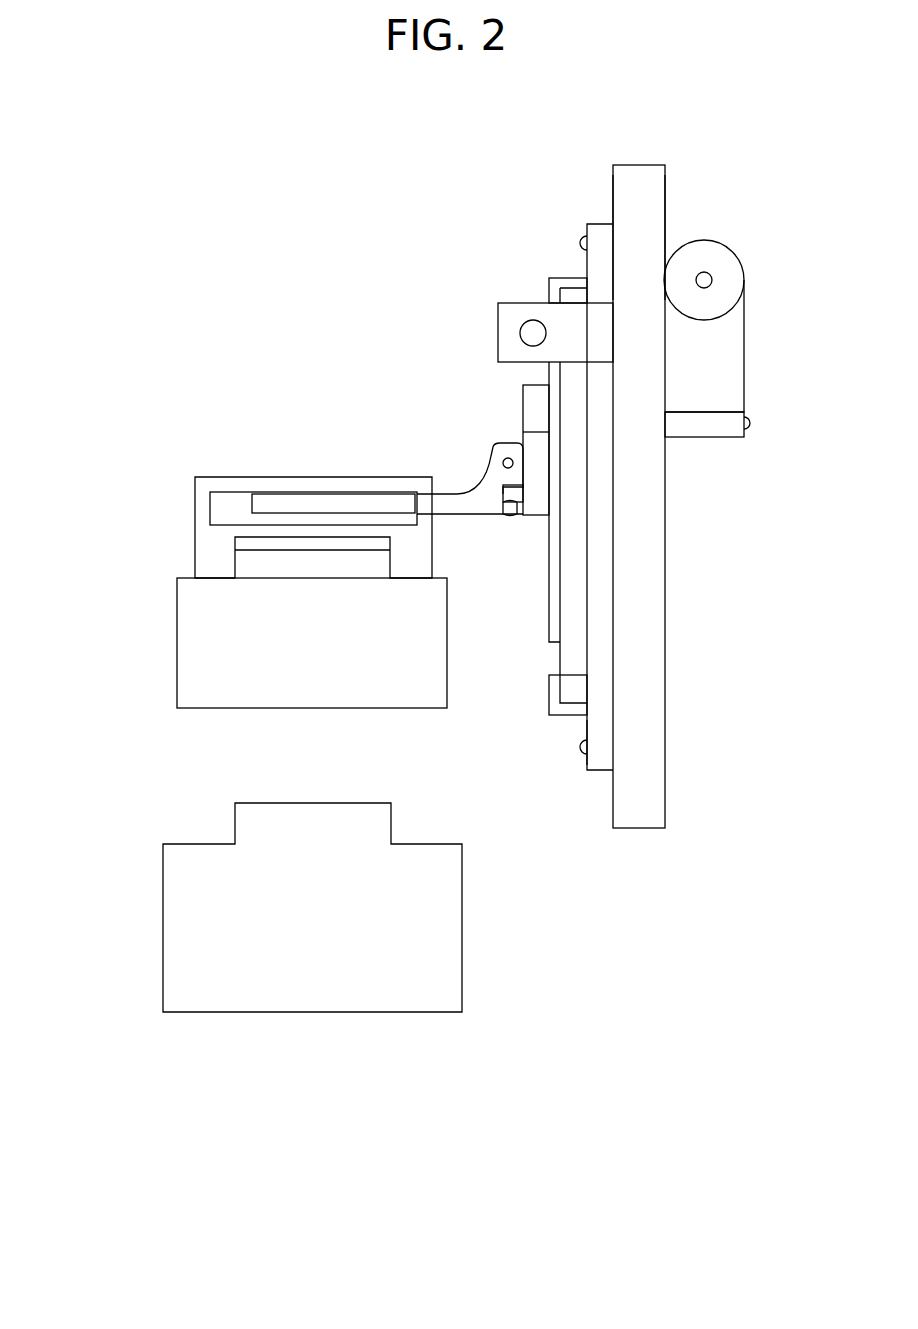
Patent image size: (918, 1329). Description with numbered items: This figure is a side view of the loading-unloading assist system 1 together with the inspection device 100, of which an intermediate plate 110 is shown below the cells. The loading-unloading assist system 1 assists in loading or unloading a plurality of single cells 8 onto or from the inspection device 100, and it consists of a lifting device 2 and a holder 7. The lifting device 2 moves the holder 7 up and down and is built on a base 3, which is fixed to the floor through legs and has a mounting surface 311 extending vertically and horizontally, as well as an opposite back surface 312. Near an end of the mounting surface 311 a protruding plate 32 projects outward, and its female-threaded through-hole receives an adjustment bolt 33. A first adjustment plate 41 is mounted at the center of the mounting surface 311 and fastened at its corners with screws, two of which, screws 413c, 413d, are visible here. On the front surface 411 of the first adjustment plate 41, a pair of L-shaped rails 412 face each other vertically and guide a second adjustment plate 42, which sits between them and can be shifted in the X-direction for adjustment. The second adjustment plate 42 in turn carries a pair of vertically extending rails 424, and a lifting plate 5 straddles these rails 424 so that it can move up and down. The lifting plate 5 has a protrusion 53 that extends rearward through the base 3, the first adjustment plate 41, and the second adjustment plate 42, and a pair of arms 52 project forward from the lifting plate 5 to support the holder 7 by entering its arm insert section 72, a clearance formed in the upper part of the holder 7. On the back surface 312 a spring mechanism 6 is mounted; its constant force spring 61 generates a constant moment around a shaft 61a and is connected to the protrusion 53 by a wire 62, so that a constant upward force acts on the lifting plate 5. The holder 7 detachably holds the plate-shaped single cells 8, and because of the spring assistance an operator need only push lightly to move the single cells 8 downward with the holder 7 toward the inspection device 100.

The loading-unloading assist system 1 is at (263, 284).
The lifting device 2 is at (416, 300).
The base 3 is at (640, 164).
The mounting surface 311 is at (606, 173).
The back surface 312 is at (667, 176).
The lifting plate 5 is at (522, 385).
The spring mechanism 6 is at (748, 217).
The holder 7 is at (303, 380).
The single cell 8 is at (177, 642).
The protruding plate 32 is at (500, 305).
The adjustment bolt 33 is at (520, 333).
The first adjustment plate 41 is at (589, 223).
The second adjustment plate 42 is at (560, 660).
The front surface 411 is at (584, 722).
The rails 412 is at (550, 280).
The screw 413c is at (579, 239).
The screw 413d is at (578, 754).
The rails 424 is at (549, 590).
The arms 52 is at (452, 493).
The protrusion 53 is at (705, 420).
The constant force spring 61 is at (700, 240).
The shaft 61a is at (713, 285).
The wire 62 is at (745, 390).
The arm insert section 72 is at (225, 500).
The inspection device 100 is at (117, 828).
The intermediate plate 110 is at (162, 915).